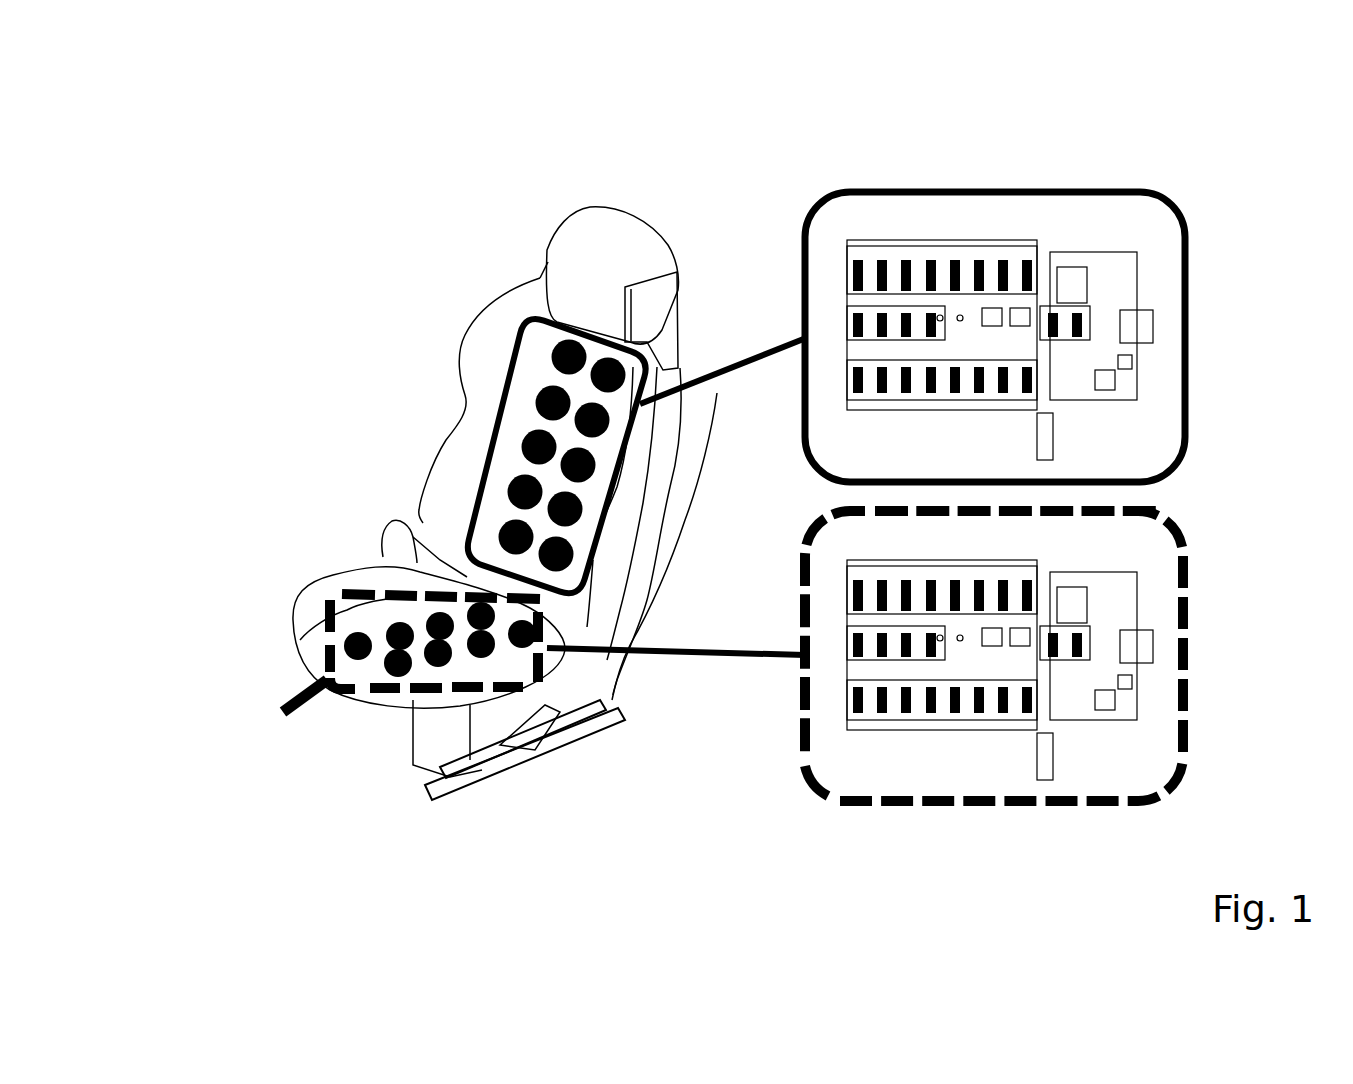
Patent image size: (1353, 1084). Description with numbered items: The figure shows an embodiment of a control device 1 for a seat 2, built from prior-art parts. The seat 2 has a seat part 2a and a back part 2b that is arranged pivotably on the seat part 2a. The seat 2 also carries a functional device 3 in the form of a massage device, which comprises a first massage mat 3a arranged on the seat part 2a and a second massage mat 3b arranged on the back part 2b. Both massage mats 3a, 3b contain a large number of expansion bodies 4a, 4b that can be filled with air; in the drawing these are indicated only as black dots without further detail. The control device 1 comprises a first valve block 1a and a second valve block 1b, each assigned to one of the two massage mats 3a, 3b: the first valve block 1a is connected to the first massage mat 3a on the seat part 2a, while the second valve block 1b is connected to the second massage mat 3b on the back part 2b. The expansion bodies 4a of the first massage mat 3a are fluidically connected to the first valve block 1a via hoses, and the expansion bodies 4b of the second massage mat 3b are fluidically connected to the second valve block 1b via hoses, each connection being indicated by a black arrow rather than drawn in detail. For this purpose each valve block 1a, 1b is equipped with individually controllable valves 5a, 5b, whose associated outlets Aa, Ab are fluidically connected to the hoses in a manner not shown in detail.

The control device 1 is at (1251, 215).
The first valve block 1a is at (1190, 652).
The second valve block 1b is at (1190, 340).
The seat 2 is at (404, 338).
The seat part 2a is at (318, 585).
The back part 2b is at (443, 438).
The functional device 3 is at (226, 606).
The first massage mat 3a is at (380, 720).
The second massage mat 3b is at (500, 378).
The expansion bodies 4a is at (448, 662).
The expansion bodies 4b is at (590, 527).
The individually controllable valves 5a is at (866, 702).
The individually controllable valves 5b is at (863, 272).
The outlets Aa is at (872, 756).
The outlets Ab is at (864, 218).